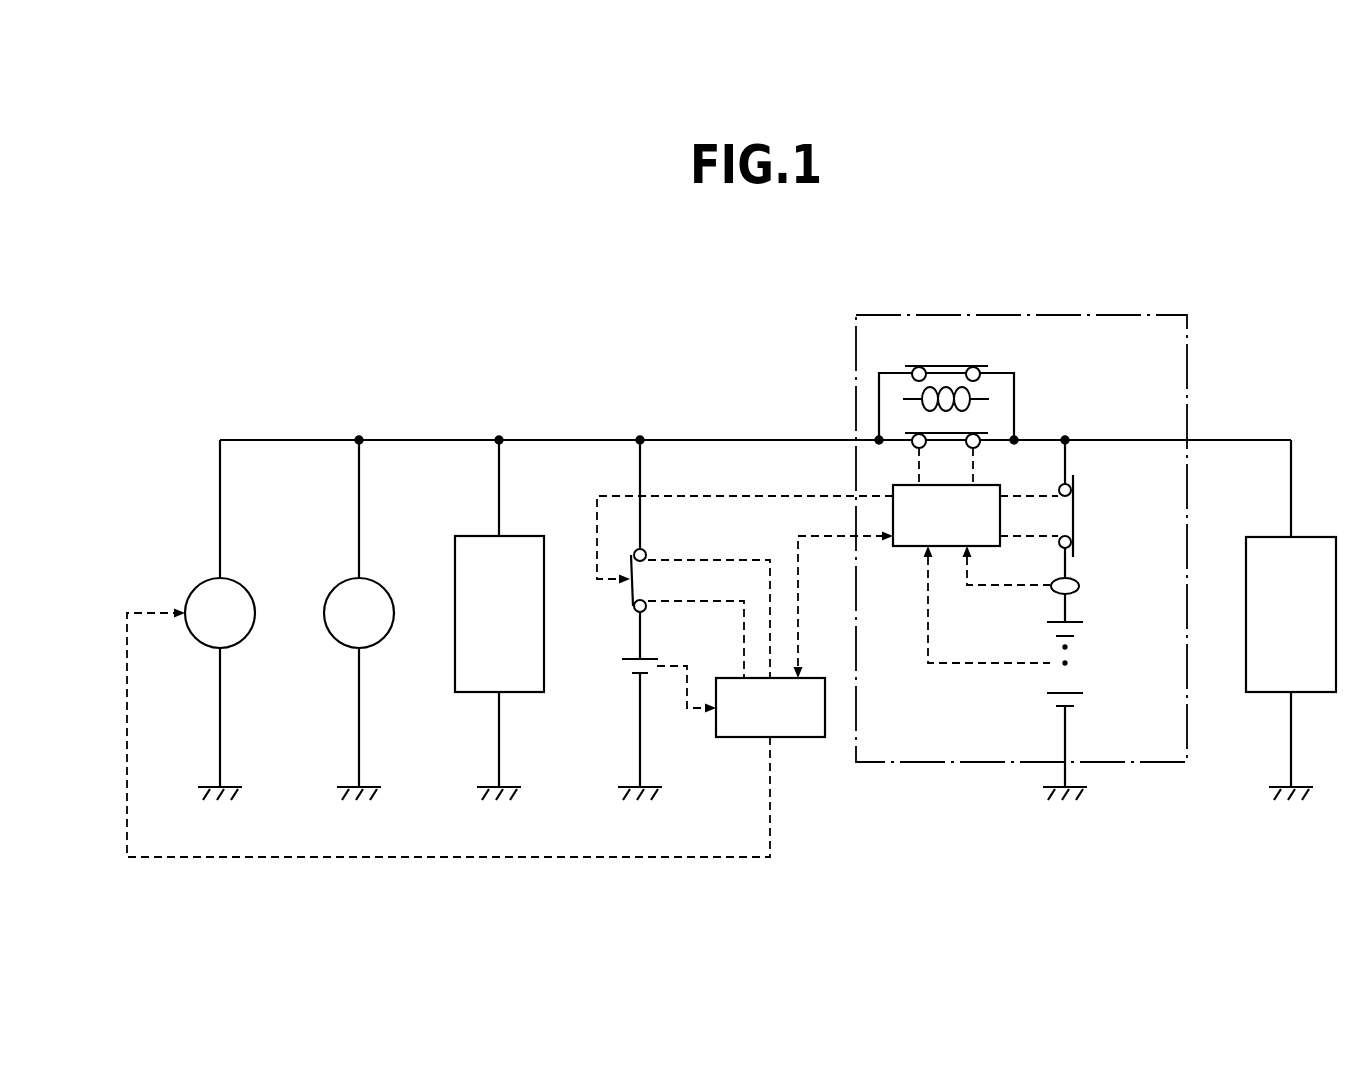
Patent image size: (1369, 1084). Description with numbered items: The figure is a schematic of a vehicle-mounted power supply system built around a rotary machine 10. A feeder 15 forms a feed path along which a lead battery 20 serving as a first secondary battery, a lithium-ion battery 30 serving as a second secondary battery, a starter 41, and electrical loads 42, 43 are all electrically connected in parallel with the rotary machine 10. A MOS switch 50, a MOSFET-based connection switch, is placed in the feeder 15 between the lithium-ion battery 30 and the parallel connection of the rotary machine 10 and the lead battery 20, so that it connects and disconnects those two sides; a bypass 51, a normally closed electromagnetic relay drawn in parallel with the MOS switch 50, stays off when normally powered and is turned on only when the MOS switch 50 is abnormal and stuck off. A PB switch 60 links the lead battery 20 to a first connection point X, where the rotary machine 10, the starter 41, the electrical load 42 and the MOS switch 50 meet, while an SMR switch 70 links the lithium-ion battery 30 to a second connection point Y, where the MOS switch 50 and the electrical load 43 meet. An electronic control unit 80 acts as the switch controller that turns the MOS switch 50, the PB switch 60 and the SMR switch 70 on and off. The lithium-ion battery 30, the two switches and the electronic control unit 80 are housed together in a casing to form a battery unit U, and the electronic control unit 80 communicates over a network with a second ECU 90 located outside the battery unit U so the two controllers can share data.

The rotary machine 10 is at (238, 582).
The feeder 15 is at (412, 438).
The lead battery 20 is at (650, 657).
The lithium-ion battery 30 is at (1070, 692).
The starter 41 is at (378, 582).
The electrical load 42 is at (520, 535).
The electrical load 43 is at (1315, 535).
The MOS switch 50 is at (977, 447).
The bypass 51 is at (962, 365).
The PB switch 60 is at (627, 598).
The SMR switch 70 is at (1073, 527).
The electronic control unit 80 is at (900, 548).
The ECU 90 is at (795, 738).
The first connection point X is at (641, 436).
The second connection point Y is at (1067, 432).
The battery unit U is at (1128, 312).